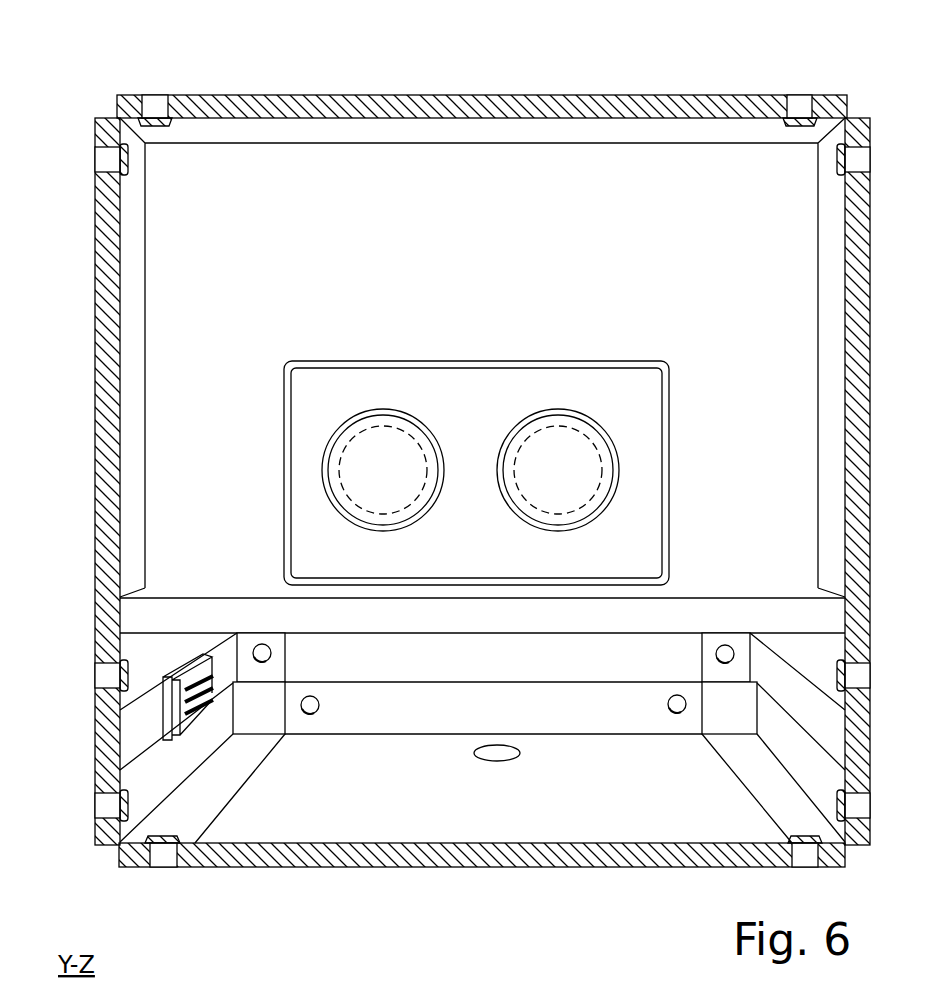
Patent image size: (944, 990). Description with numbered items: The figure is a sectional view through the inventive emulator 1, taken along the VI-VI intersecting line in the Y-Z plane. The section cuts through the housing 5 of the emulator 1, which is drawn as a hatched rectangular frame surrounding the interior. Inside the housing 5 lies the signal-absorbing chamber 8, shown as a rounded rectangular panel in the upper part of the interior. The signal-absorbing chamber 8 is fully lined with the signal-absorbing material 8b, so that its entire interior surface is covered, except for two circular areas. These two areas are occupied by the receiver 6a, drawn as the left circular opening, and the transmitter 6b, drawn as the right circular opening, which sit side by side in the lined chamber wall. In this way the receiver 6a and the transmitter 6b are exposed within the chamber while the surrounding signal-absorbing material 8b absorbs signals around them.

The emulator 1 is at (78, 75).
The housing 5 is at (93, 330).
The signal-absorbing chamber 8 is at (477, 365).
The signal-absorbing material 8b is at (476, 473).
The receiver 6a is at (383, 470).
The transmitter 6b is at (558, 470).